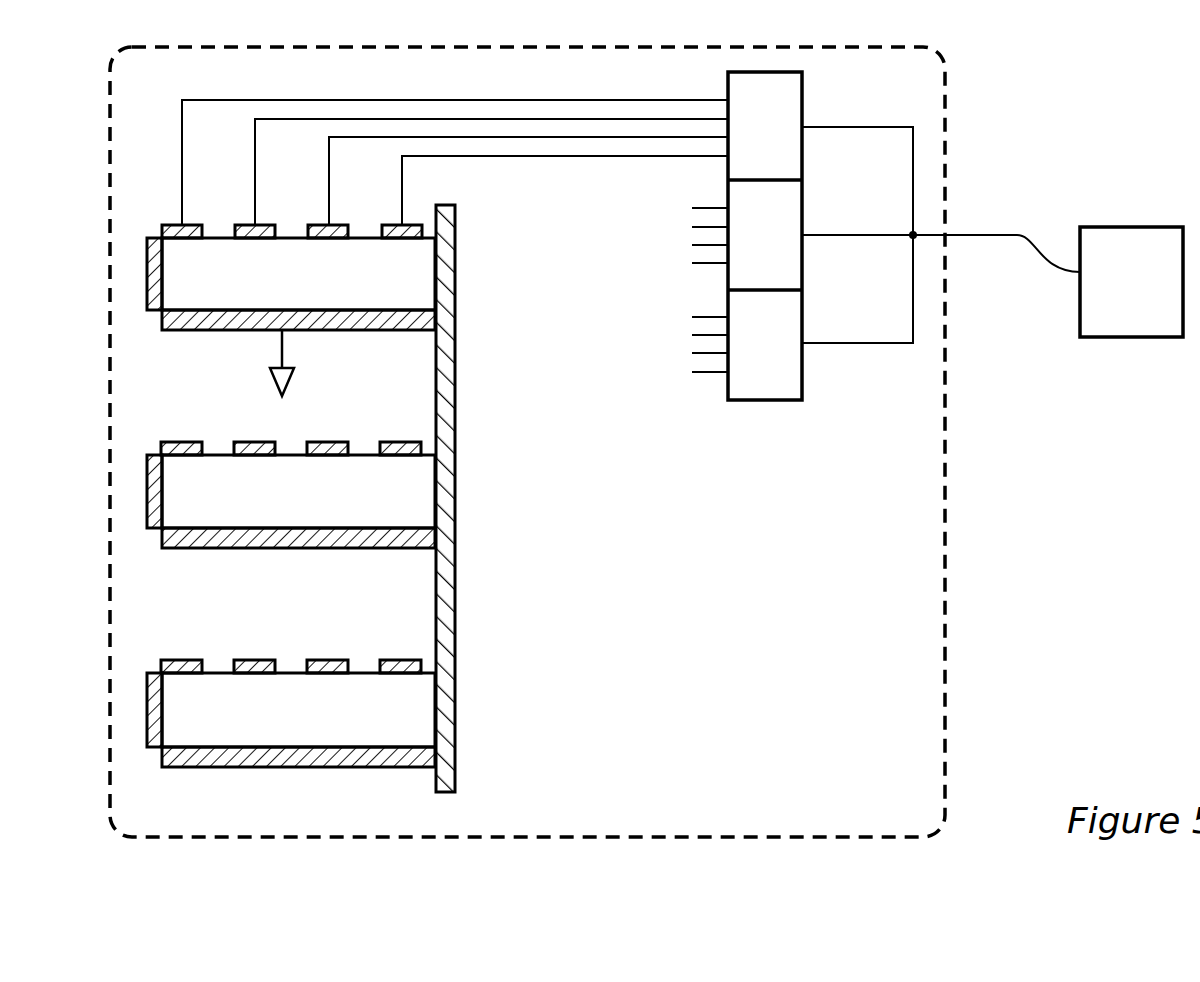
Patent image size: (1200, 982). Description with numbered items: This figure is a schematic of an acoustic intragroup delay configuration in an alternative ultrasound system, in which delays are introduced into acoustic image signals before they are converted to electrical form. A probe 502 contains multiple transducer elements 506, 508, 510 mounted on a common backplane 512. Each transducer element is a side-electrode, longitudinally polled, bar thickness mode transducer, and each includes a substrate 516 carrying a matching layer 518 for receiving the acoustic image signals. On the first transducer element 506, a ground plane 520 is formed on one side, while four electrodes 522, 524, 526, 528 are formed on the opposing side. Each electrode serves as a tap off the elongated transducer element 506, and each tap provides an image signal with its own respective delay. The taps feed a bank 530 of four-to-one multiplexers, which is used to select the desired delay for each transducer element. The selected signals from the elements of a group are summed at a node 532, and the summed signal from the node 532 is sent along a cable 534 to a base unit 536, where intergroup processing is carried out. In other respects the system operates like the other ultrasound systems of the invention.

The probe 502 is at (947, 92).
The transducer element 506 is at (299, 293).
The transducer element 508 is at (328, 551).
The transducer element 510 is at (328, 770).
The common backplane 512 is at (456, 422).
The substrate 516 is at (298, 274).
The matching layer 518 is at (148, 312).
The ground plane 520 is at (253, 331).
The electrode 522 is at (193, 225).
The electrode 524 is at (266, 225).
The electrode 526 is at (339, 225).
The electrode 528 is at (411, 225).
The bank of 4×1 multiplexers 530 is at (755, 401).
The node 532 is at (912, 234).
The cable 534 is at (1024, 237).
The base unit 536 is at (1131, 282).